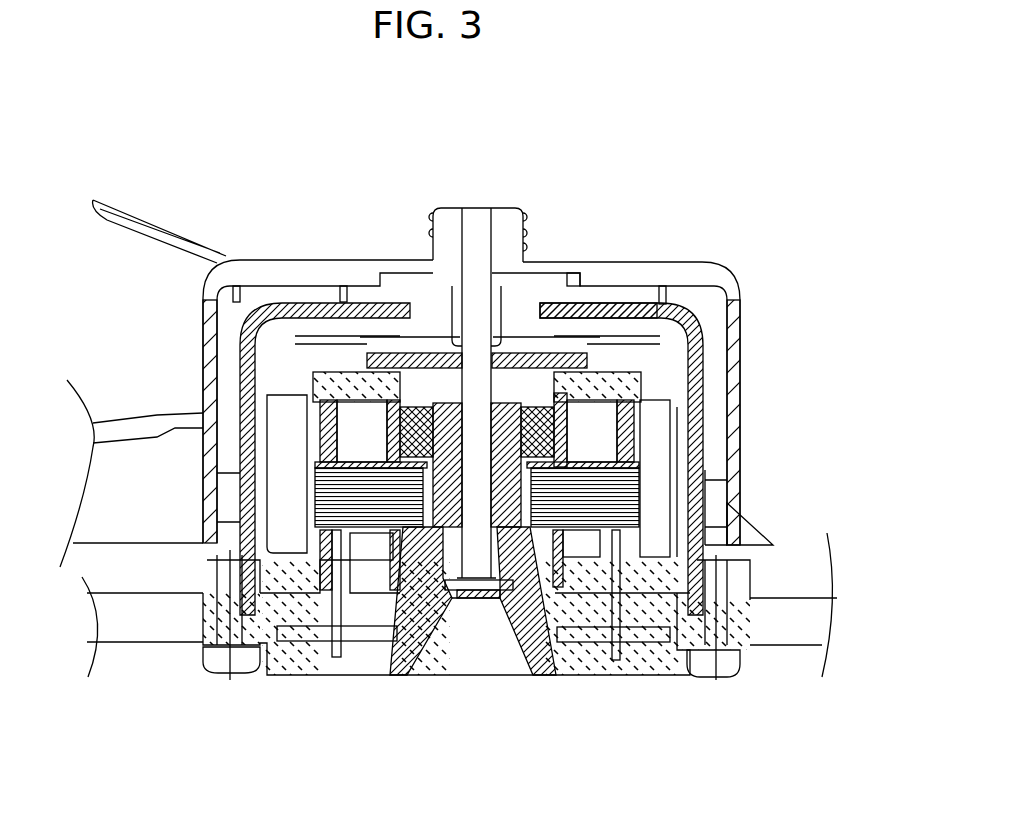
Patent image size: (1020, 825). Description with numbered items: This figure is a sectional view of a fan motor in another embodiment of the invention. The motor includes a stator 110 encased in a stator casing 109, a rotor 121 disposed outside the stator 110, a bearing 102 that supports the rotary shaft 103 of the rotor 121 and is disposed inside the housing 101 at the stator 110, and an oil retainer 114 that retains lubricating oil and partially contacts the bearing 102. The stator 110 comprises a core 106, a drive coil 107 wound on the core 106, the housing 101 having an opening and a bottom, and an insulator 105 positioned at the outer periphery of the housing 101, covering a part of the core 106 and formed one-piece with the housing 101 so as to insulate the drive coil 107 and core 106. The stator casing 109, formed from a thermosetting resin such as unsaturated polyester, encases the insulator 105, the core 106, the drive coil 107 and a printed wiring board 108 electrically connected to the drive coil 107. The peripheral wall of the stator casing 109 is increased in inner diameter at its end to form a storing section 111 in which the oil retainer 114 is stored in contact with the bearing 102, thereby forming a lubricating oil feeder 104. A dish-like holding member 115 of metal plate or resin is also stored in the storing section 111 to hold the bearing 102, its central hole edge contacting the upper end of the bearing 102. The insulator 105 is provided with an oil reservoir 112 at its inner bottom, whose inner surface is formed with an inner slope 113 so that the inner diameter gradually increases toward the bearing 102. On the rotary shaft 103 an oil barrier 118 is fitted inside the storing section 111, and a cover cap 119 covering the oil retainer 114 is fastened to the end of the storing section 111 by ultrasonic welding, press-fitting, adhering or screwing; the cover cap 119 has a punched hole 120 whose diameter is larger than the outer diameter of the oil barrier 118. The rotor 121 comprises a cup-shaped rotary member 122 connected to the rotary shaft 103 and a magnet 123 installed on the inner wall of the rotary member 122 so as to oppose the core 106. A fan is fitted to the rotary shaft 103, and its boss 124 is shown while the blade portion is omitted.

The housing 101 is at (527, 617).
The bearing 102 is at (462, 600).
The rotary shaft 103 is at (475, 273).
The lubricating oil feeder 104 is at (567, 420).
The insulator 105 is at (317, 423).
The core 106 is at (408, 510).
The drive coil 107 is at (377, 547).
The printed wiring board 108 is at (313, 640).
The stator casing 109 is at (548, 617).
The stator 110 is at (350, 497).
The storing section 111 is at (387, 373).
The oil reservoir 112 is at (505, 603).
The inner slope 113 is at (455, 600).
The oil retainer 114 is at (560, 380).
The holding member 115 is at (440, 400).
The oil barrier 118 is at (500, 378).
The cover cap 119 is at (405, 383).
The punched hole 120 is at (583, 305).
The rotor 121 is at (677, 547).
The rotary member 122 is at (673, 440).
The magnet 123 is at (657, 547).
The boss 124 is at (507, 217).